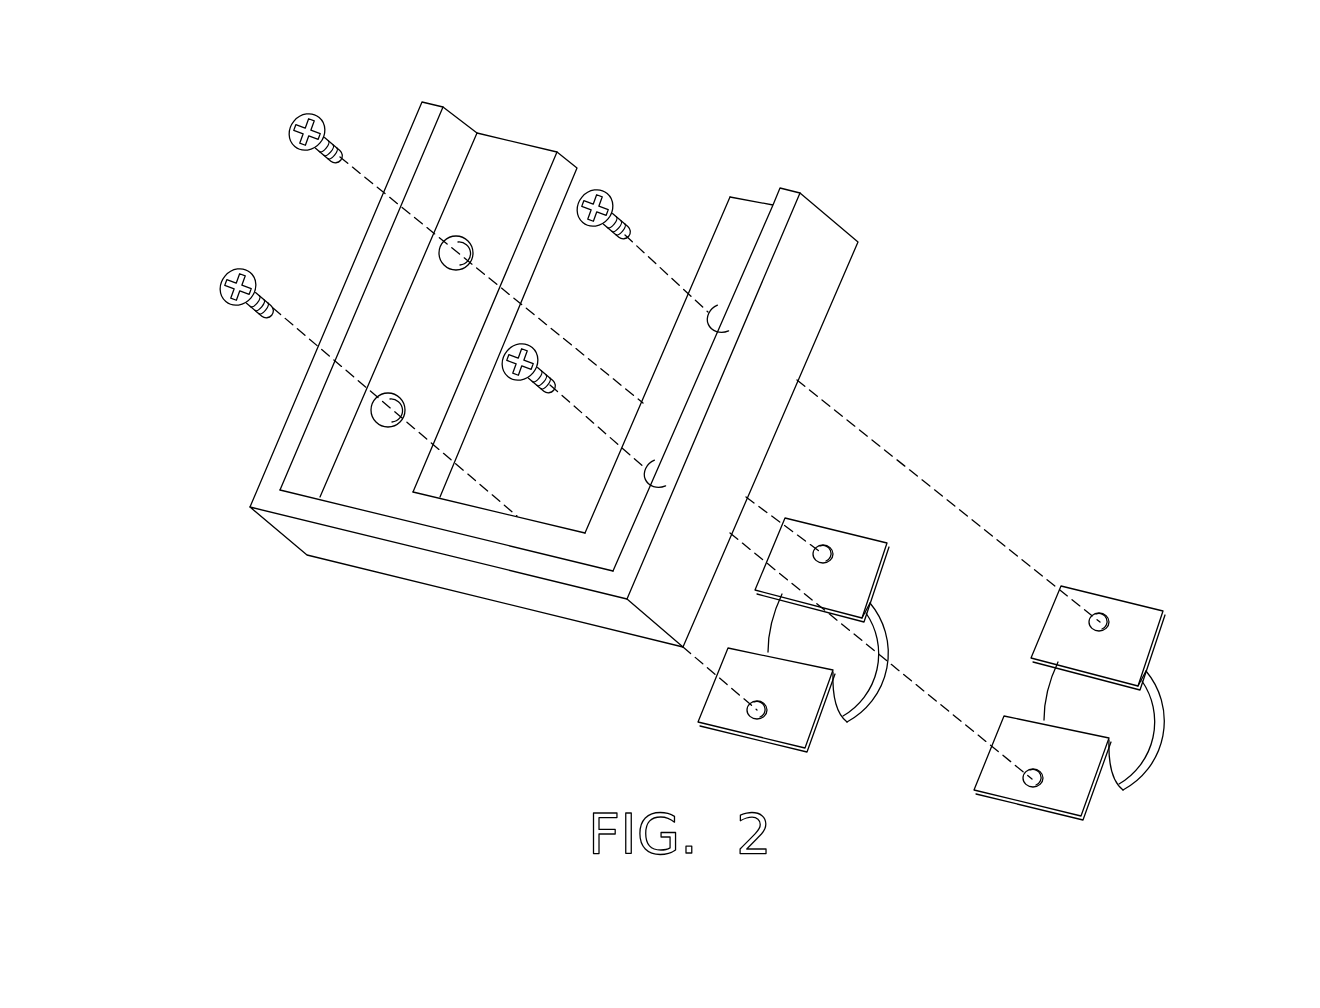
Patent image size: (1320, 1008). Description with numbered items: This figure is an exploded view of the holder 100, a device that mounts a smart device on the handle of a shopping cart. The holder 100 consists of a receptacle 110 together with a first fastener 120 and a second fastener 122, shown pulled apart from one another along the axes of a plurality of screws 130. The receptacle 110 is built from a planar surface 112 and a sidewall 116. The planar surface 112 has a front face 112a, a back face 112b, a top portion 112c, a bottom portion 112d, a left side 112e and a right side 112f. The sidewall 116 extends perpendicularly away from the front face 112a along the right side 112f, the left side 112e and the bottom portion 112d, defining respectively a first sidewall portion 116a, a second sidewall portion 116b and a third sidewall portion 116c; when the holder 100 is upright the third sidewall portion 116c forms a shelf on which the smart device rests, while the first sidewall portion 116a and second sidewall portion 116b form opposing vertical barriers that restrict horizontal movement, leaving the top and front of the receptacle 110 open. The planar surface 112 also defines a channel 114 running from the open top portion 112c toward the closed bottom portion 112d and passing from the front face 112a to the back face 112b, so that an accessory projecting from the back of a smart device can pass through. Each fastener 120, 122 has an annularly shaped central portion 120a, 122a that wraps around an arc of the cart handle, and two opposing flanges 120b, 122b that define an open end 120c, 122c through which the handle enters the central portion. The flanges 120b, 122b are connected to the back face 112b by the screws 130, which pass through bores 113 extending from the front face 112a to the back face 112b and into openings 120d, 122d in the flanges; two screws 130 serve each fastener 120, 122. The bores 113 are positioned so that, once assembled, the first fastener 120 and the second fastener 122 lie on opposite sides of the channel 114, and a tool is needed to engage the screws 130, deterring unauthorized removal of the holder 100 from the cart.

The holder 100 is at (136, 124).
The receptacle 110 is at (857, 252).
The planar surface 112 is at (563, 168).
The front face 112a is at (515, 150).
The back face 112b is at (803, 312).
The top portion 112c is at (487, 134).
The bottom portion 112d is at (572, 553).
The left side 112e is at (450, 200).
The right side 112f is at (695, 367).
The bores 113 is at (648, 472).
The channel 114 is at (658, 180).
The sidewall 116 is at (821, 351).
The first sidewall portion 116a is at (786, 195).
The second sidewall portion 116b is at (355, 283).
The third sidewall portion 116c is at (443, 543).
The first fastener 120 is at (838, 532).
The central portion 120a is at (850, 693).
The opposing flanges 120b is at (860, 585).
The open end 120c is at (756, 635).
The openings 120d is at (822, 543).
The second fastener 122 is at (1140, 597).
The central portion 122a is at (1133, 717).
The opposing flanges 122b is at (1147, 637).
The open end 122c is at (1034, 703).
The openings 122d is at (1098, 613).
The screws 130 is at (232, 273).